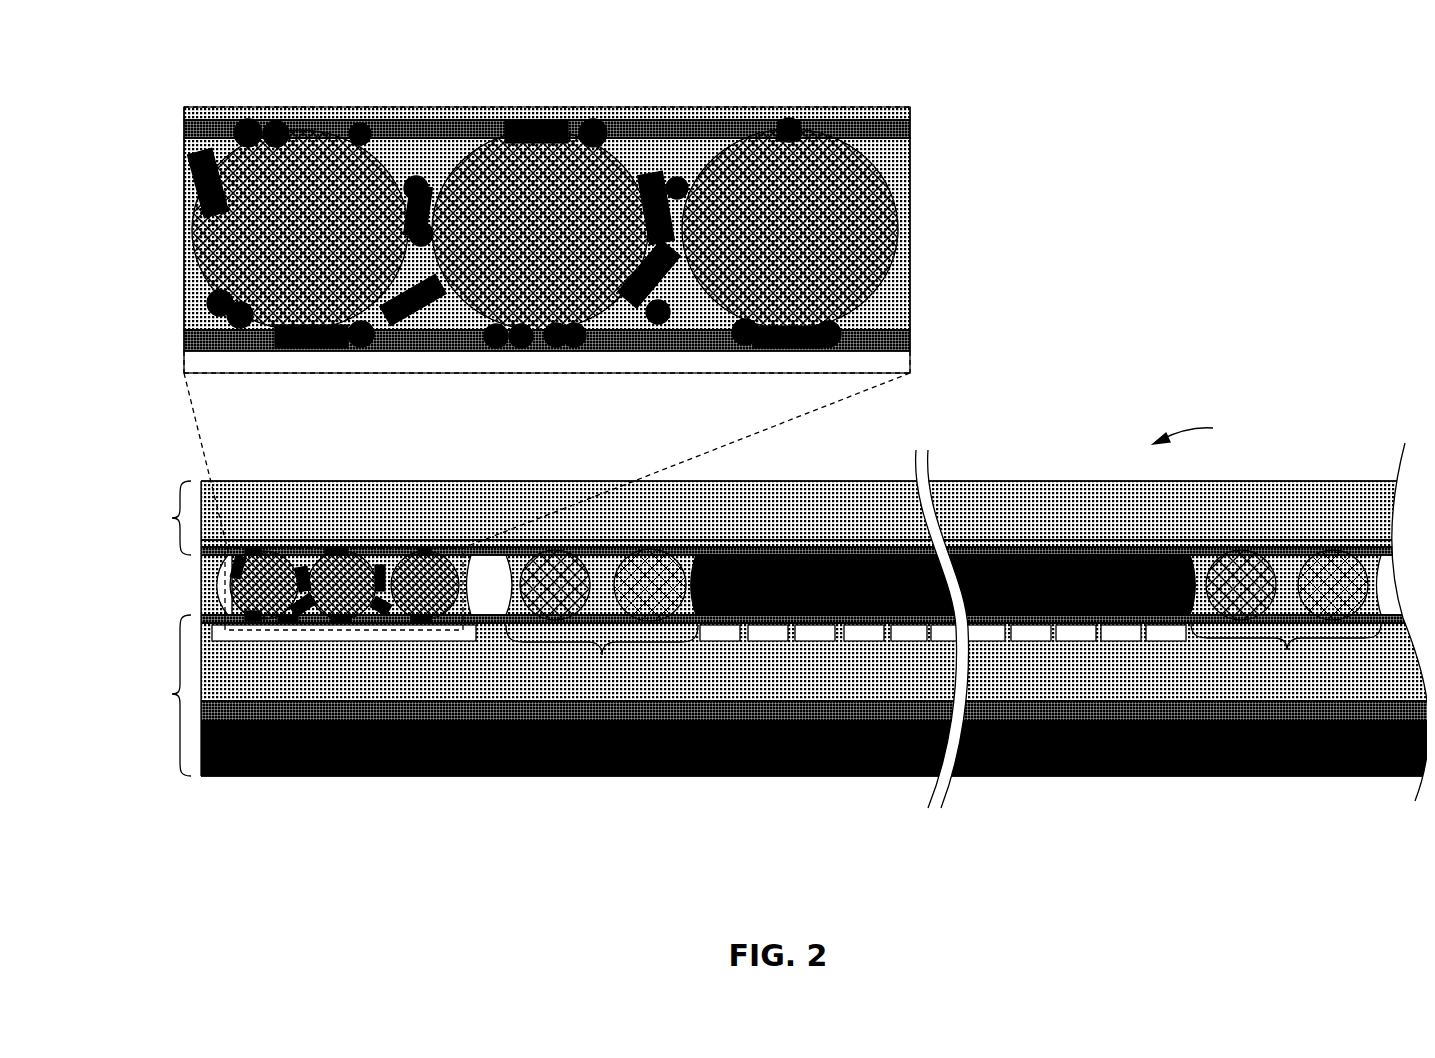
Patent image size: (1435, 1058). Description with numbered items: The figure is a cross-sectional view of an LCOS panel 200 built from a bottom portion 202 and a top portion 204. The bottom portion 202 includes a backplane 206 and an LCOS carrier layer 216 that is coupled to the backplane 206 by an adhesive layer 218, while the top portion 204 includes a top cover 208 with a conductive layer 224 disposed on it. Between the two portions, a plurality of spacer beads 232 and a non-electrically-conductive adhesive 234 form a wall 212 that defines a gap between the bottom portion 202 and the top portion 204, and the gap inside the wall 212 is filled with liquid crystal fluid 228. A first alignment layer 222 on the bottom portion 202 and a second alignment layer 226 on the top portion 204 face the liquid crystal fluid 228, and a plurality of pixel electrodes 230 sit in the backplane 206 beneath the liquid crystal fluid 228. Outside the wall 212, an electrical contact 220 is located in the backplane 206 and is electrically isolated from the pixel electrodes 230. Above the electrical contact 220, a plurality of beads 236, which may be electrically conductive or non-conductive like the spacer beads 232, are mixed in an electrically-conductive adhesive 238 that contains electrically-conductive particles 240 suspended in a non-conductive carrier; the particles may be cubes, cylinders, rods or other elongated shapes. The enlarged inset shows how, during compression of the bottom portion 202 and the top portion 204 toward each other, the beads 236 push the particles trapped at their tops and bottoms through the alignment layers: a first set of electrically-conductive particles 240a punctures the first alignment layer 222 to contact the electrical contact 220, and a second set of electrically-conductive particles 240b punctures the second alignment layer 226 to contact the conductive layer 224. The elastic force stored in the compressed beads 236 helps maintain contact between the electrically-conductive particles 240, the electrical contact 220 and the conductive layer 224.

The LCOS panel 200 is at (1210, 429).
The bottom portion 202 is at (155, 695).
The top portion 204 is at (155, 518).
The backplane 206 is at (979, 674).
The top cover 208 is at (972, 514).
The wall 212 is at (943, 654).
The LCOS carrier layer 216 is at (1169, 754).
The adhesive layer 218 is at (1073, 702).
The electrical contact 220 is at (466, 621).
The first alignment layer 222 is at (1400, 613).
The conductive layer 224 is at (850, 537).
The second alignment layer 226 is at (803, 541).
The liquid crystal fluid 228 is at (776, 589).
The pixel electrodes 230 is at (902, 628).
The spacer beads 232 is at (637, 560).
The non-electrically-conductive adhesive 234 is at (593, 555).
The beads 236 is at (485, 158).
The electrically-conductive adhesive 238 is at (182, 163).
The electrically-conductive particles 240 is at (333, 538).
The first set of electrically-conductive particles 240a is at (307, 333).
The second set of electrically-conductive particles 240b is at (250, 118).